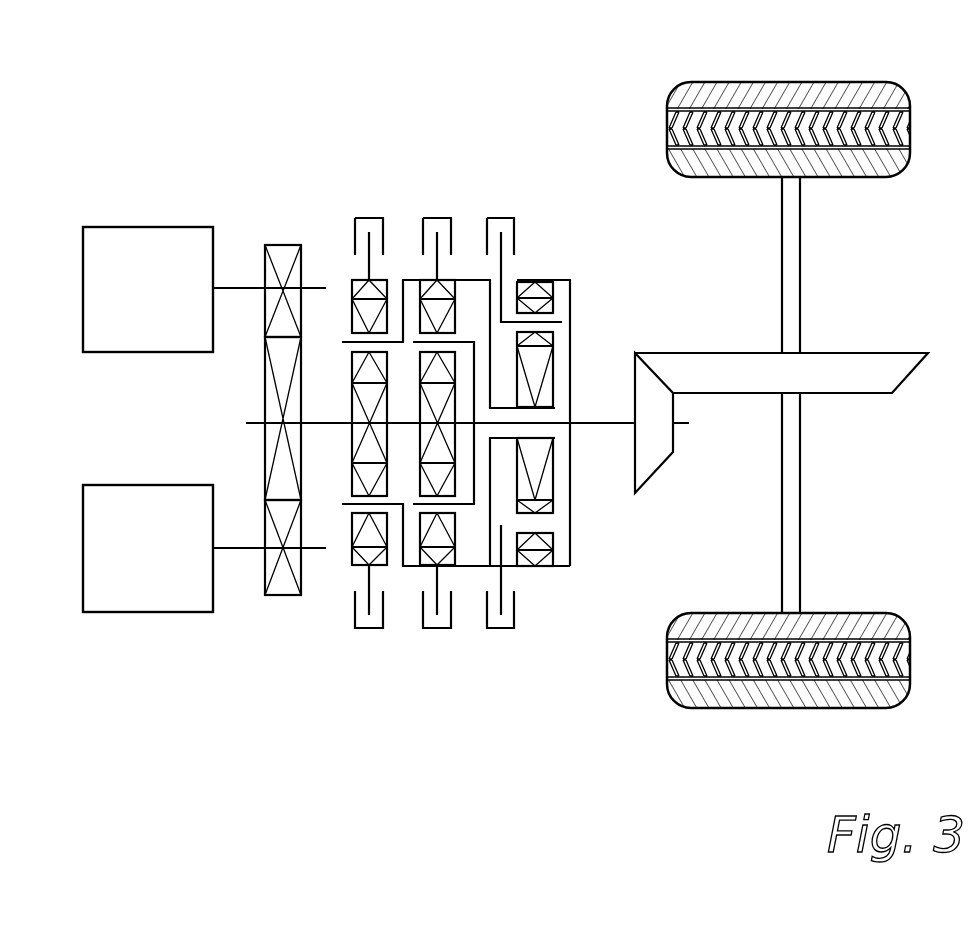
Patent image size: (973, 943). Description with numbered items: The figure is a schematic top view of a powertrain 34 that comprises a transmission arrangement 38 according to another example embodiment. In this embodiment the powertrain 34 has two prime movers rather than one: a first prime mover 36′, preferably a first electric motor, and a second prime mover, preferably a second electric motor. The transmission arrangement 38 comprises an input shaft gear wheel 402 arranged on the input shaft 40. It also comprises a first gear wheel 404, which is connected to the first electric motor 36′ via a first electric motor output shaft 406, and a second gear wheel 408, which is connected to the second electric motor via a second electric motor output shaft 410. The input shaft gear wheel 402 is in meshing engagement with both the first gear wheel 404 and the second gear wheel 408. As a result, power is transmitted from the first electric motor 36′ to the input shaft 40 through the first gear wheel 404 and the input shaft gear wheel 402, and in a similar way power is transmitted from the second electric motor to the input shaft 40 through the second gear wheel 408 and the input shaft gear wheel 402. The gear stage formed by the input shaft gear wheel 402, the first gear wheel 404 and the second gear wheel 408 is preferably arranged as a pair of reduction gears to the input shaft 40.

The powertrain 34 is at (635, 357).
The first prime mover 36′ is at (129, 227).
The transmission arrangement 38 is at (378, 156).
The input shaft 40 is at (316, 422).
The input shaft gear wheel 402 is at (263, 378).
The first gear wheel 404 is at (273, 243).
The first electric motor output shaft 406 is at (240, 288).
The second gear wheel 408 is at (277, 597).
The second electric motor output shaft 410 is at (243, 550).